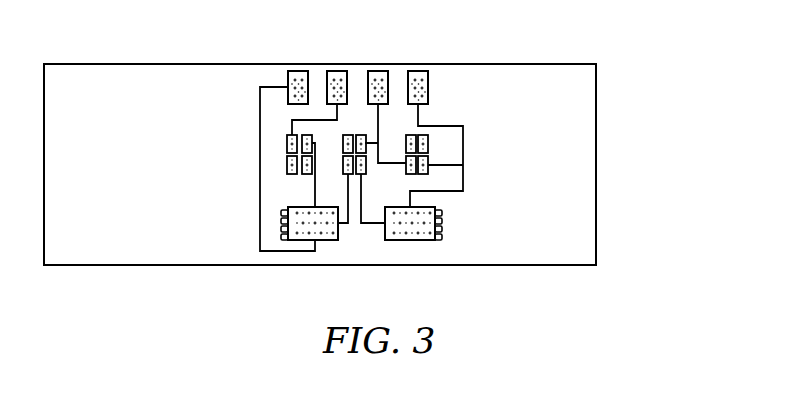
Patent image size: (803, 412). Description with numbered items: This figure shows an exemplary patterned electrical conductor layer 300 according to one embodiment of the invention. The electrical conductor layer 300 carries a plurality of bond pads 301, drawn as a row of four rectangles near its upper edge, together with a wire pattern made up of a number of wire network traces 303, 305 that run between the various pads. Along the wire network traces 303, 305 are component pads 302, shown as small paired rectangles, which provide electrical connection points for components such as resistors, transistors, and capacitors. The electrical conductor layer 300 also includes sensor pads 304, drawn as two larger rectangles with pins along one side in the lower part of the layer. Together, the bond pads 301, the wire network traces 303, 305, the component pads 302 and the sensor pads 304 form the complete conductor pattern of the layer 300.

The patterned electrical conductor layer 300 is at (632, 222).
The bond pads 301 is at (300, 74).
The component pads 302 is at (288, 138).
The wire network trace 303 is at (260, 171).
The sensor pads 304 is at (400, 230).
The wire network trace 305 is at (463, 143).